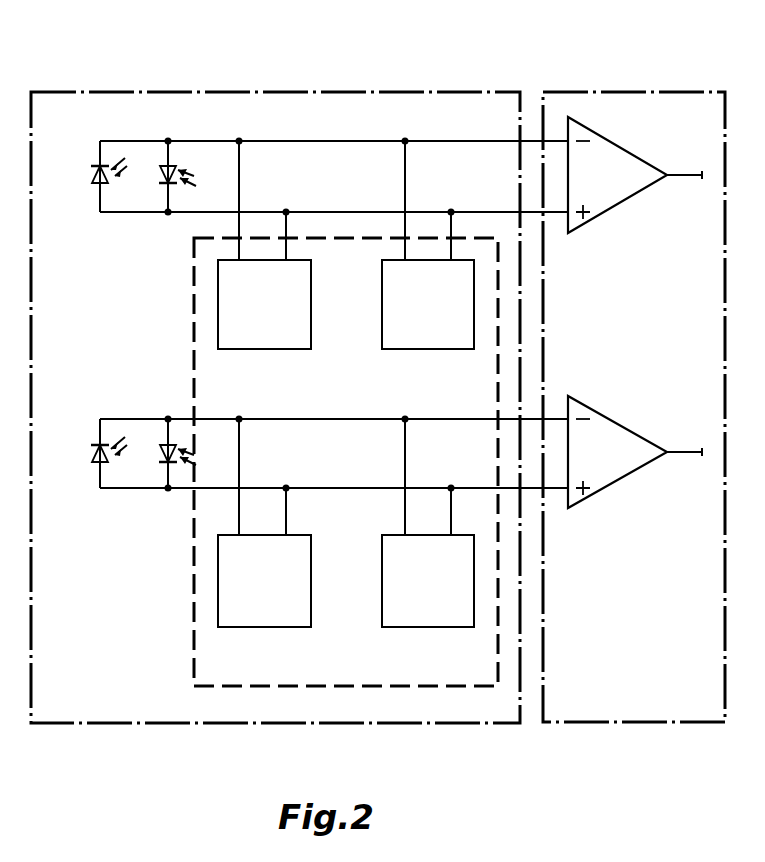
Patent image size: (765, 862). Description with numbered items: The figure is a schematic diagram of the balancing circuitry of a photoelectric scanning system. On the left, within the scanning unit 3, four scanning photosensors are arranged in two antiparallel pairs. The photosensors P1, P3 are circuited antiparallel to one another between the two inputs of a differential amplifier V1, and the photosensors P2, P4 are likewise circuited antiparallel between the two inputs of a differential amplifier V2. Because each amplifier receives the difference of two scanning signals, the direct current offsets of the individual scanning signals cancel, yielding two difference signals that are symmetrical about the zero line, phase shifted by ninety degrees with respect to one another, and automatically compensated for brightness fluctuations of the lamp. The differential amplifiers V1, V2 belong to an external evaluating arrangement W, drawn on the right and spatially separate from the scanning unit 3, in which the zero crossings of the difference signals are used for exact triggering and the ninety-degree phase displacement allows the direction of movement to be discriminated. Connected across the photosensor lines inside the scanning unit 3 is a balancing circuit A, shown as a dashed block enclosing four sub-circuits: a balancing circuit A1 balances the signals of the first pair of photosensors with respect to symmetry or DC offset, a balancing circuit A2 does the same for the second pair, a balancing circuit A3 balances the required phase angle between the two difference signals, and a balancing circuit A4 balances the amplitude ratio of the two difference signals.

The scanning unit 3 is at (272, 86).
The evaluating arrangement W is at (630, 86).
The balancing circuit A is at (194, 340).
The balancing circuit A1 is at (268, 350).
The balancing circuit A2 is at (268, 628).
The balancing circuit A3 is at (438, 350).
The balancing circuit A4 is at (440, 628).
The photosensor P1 is at (96, 186).
The photosensor P2 is at (96, 465).
The photosensor P3 is at (164, 186).
The photosensor P4 is at (164, 465).
The differential amplifier V1 is at (607, 197).
The differential amplifier V2 is at (606, 475).